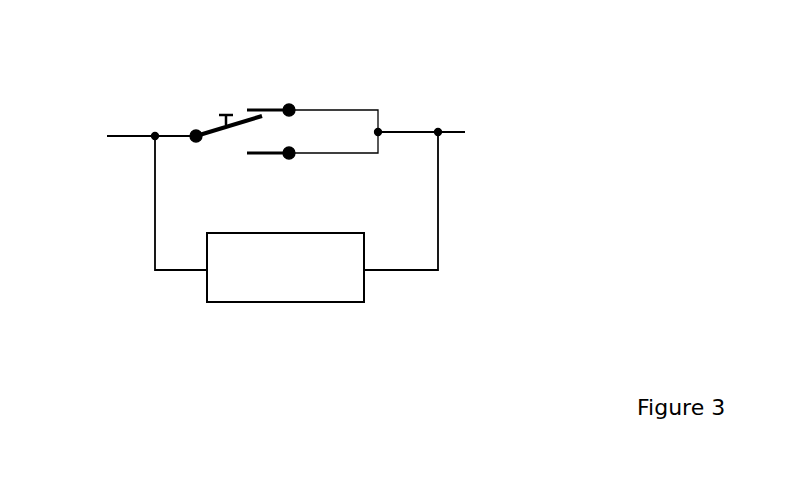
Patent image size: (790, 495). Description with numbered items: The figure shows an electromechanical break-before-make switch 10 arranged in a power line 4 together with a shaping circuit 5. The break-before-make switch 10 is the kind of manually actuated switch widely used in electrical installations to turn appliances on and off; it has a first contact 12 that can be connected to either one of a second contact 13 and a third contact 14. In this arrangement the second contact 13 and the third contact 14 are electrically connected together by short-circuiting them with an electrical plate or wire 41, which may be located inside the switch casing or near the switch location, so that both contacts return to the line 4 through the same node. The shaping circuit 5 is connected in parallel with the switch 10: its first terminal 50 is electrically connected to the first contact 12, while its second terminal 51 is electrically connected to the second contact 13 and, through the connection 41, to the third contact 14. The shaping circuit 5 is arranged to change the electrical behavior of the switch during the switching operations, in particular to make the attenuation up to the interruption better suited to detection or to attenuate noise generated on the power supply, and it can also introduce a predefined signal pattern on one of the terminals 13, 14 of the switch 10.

The power line 4 is at (108, 116).
The break-before-make switch 10 is at (256, 61).
The first contact 12 is at (192, 116).
The second contact 13 is at (302, 88).
The third contact 14 is at (302, 173).
The electrical plate or wire 41 is at (392, 101).
The first terminal 50 is at (192, 287).
The second terminal 51 is at (380, 285).
The shaping circuit 5 is at (340, 309).